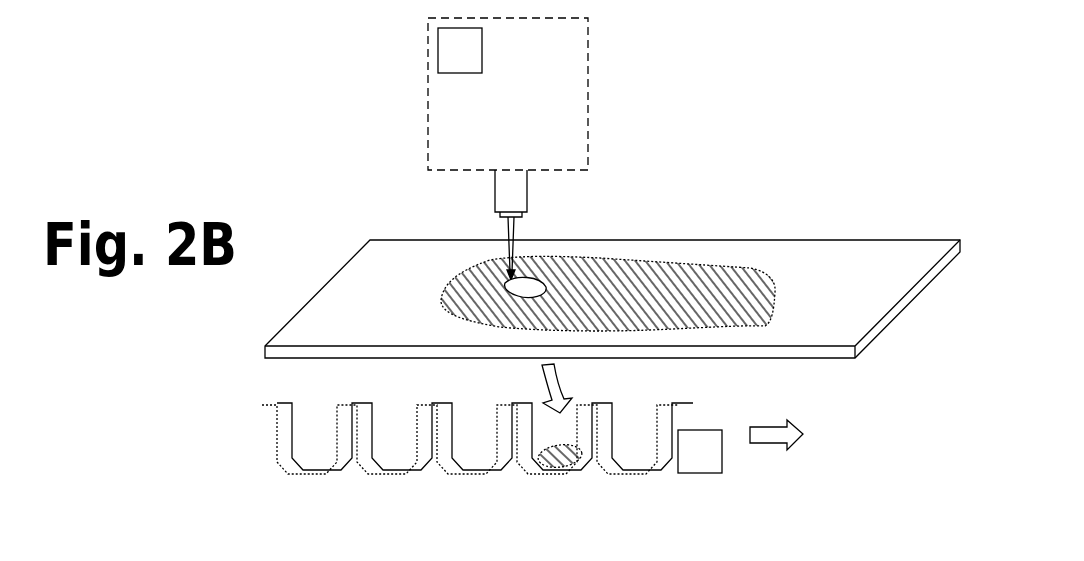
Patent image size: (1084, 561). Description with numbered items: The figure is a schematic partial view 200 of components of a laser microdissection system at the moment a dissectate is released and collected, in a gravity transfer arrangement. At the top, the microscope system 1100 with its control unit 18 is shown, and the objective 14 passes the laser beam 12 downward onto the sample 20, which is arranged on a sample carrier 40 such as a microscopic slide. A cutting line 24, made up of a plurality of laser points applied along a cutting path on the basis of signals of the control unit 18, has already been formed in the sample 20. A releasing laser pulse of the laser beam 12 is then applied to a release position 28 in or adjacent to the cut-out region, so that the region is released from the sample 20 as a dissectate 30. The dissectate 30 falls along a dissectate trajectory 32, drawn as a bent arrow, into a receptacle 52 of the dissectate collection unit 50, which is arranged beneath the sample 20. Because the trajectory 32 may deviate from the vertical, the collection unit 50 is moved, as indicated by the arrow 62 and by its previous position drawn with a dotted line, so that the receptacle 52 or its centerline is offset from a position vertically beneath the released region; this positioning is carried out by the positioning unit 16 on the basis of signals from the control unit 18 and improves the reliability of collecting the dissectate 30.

The schematic partial view 200 is at (713, 72).
The microscope system 1100 is at (534, 107).
The control unit 18 is at (447, 63).
The objective 14 is at (529, 212).
The laser beam 12 is at (505, 230).
The sample carrier 40 is at (376, 262).
The sample 20 is at (743, 268).
The release position 28 is at (509, 279).
The cutting line 24 is at (543, 296).
The dissectate trajectory 32 is at (546, 390).
The dissectate collection unit 50 is at (262, 440).
The receptacle 52 is at (318, 474).
The dissectate 30 is at (561, 462).
The positioning unit 16 is at (687, 460).
The arrow 62 is at (773, 444).